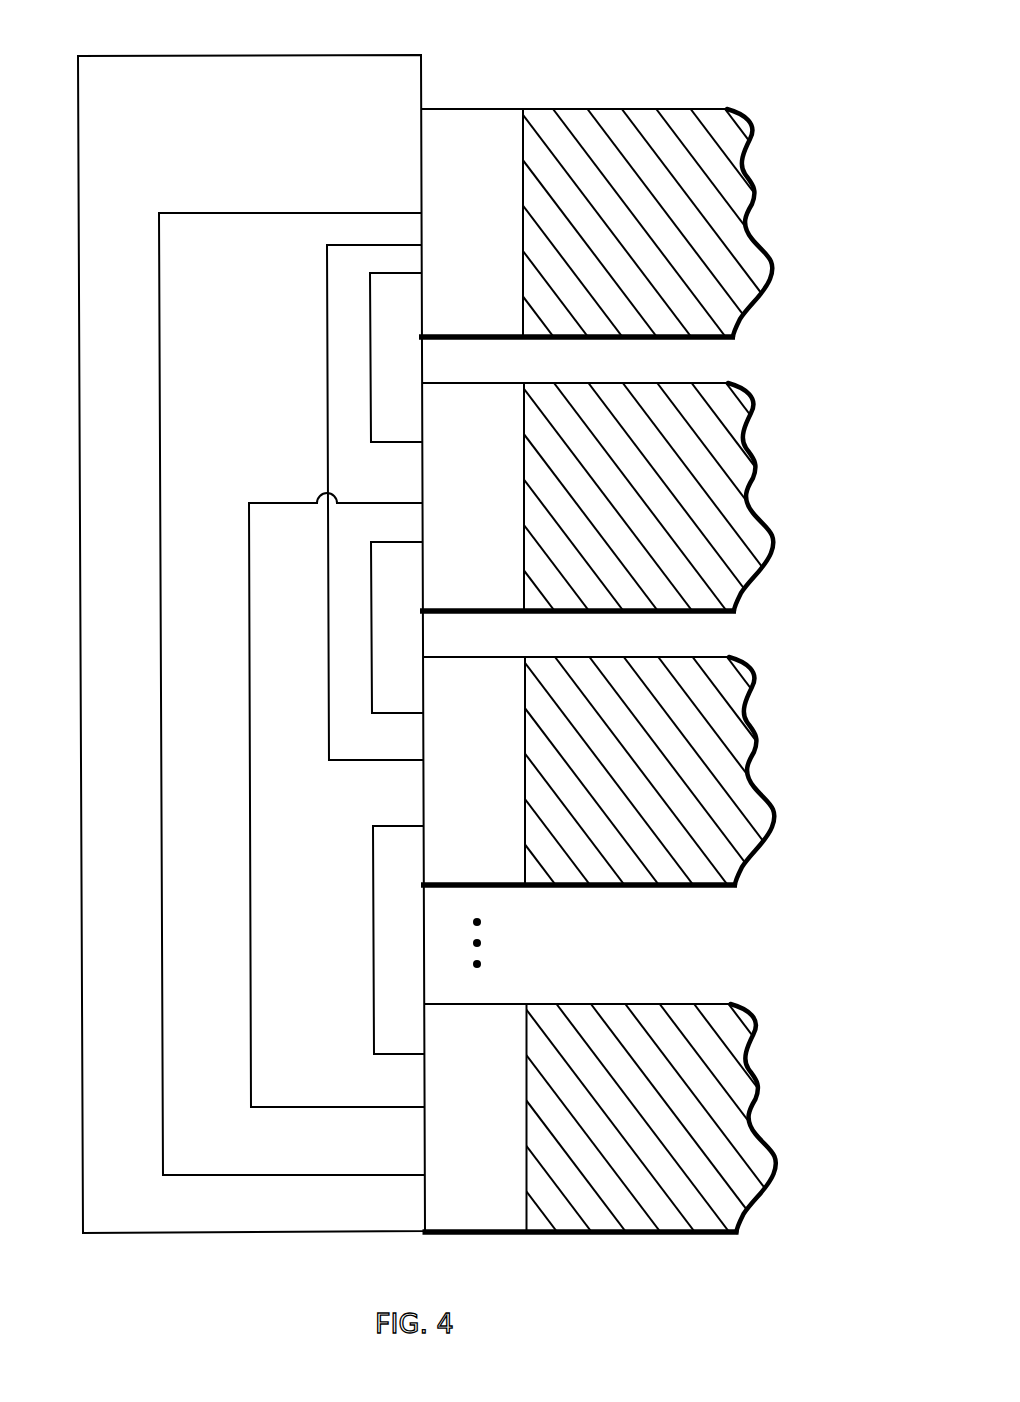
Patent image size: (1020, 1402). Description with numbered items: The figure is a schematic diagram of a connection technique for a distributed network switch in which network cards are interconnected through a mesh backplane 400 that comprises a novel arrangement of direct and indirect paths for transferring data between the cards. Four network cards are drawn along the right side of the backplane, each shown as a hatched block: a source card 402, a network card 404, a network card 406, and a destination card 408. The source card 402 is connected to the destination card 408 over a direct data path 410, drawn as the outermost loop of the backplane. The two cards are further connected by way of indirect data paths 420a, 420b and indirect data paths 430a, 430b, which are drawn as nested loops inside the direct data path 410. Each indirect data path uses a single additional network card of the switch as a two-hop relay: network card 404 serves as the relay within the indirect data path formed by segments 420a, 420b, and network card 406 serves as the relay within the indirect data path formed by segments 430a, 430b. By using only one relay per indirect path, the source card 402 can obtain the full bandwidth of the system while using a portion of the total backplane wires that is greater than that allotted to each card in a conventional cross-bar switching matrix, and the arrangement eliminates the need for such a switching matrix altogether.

The mesh backplane 400 is at (224, 45).
The source card 402 is at (729, 110).
The network card 404 is at (730, 384).
The network card 406 is at (731, 658).
The destination card 408 is at (732, 1004).
The direct data path 410 is at (237, 213).
The indirect data path 420a is at (370, 423).
The indirect data path 420b is at (250, 688).
The indirect data path 430a is at (327, 394).
The indirect data path 430b is at (373, 945).